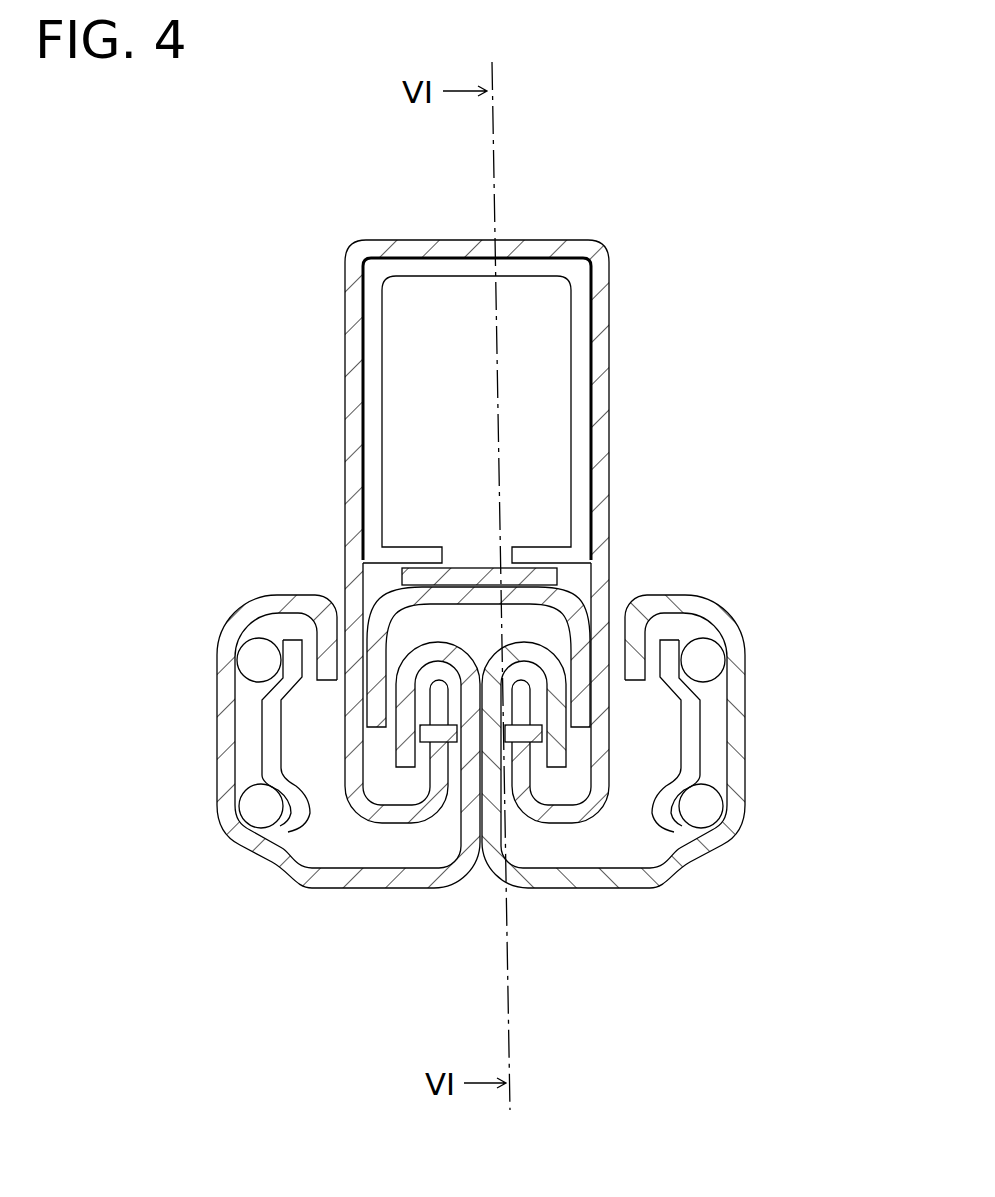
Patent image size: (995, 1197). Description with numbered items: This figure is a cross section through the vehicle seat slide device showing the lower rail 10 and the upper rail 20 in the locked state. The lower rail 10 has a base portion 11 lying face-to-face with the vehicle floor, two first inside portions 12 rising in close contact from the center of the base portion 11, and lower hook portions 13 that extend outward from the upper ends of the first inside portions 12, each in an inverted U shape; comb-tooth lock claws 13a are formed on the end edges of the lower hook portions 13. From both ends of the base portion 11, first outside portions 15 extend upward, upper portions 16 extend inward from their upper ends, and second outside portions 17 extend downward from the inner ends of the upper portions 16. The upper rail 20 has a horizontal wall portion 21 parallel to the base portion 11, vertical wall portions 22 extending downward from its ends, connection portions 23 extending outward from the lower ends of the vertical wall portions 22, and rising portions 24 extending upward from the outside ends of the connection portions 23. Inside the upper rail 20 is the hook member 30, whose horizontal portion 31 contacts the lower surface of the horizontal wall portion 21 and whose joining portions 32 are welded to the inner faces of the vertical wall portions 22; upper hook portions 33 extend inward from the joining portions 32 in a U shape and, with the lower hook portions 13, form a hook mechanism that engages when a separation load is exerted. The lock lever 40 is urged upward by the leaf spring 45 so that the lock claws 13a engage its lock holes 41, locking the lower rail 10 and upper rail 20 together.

The lower rail 10 is at (478, 749).
The base portion 11 is at (478, 738).
The first inside portions 12 is at (432, 868).
The lower hook portions 13 is at (424, 646).
The lock claws 13a is at (420, 745).
The first outside portions 15 is at (222, 744).
The upper portions 16 is at (288, 602).
The second outside portions 17 is at (321, 639).
The upper rail 20 is at (501, 583).
The horizontal wall portion 21 is at (443, 248).
The vertical wall portions 22 is at (350, 380).
The connection portions 23 is at (263, 850).
The rising portions 24 is at (269, 718).
The hook member 30 is at (477, 410).
The horizontal portion 31 is at (440, 267).
The joining portions 32 is at (377, 433).
The upper hook portions 33 is at (412, 812).
The lock lever 40 is at (486, 595).
The lock holes 41 is at (246, 765).
The leaf spring 45 is at (458, 575).